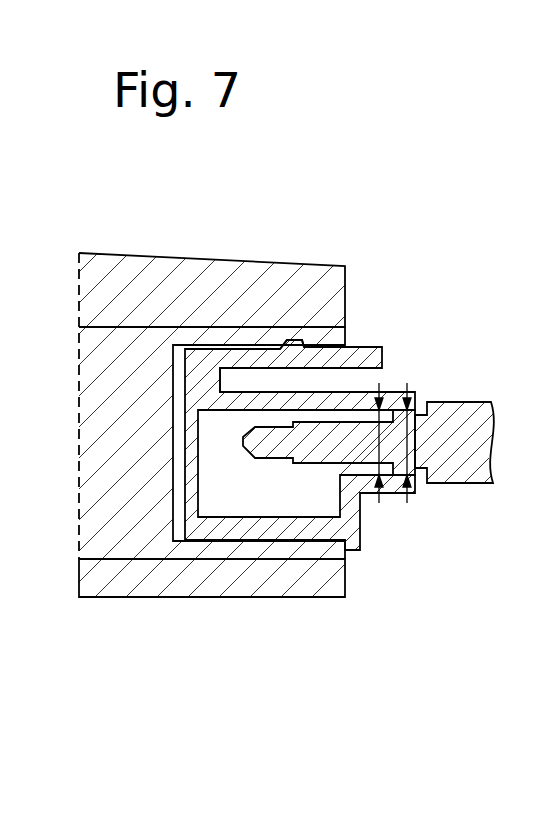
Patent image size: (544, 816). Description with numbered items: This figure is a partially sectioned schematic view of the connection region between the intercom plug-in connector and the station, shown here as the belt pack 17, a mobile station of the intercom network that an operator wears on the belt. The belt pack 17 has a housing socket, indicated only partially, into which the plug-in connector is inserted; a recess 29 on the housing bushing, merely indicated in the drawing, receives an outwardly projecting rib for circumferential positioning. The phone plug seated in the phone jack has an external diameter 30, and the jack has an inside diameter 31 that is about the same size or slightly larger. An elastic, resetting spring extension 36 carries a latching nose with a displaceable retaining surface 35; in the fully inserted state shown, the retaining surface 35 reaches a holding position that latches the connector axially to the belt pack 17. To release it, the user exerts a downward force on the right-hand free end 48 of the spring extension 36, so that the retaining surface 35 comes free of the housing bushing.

The belt pack 17 is at (203, 572).
The recess 29 is at (352, 347).
The external diameter 30 is at (406, 414).
The inside diameter 31 is at (408, 390).
The retaining surface 35 is at (297, 342).
The spring extension 36 is at (260, 363).
The free end 48 is at (383, 355).